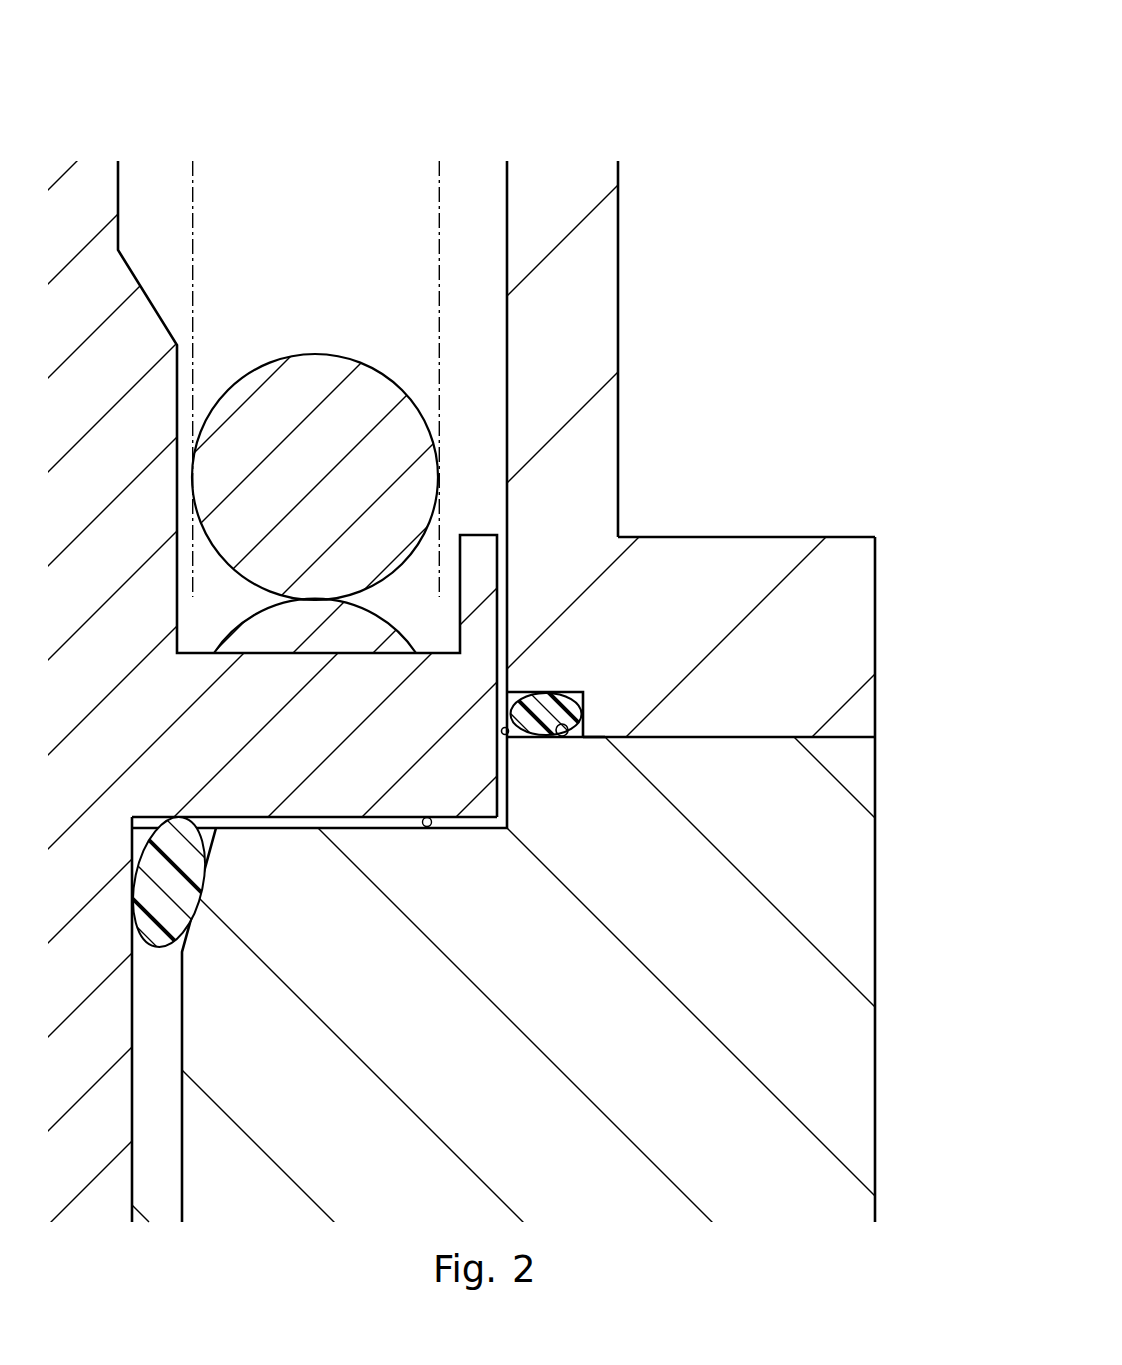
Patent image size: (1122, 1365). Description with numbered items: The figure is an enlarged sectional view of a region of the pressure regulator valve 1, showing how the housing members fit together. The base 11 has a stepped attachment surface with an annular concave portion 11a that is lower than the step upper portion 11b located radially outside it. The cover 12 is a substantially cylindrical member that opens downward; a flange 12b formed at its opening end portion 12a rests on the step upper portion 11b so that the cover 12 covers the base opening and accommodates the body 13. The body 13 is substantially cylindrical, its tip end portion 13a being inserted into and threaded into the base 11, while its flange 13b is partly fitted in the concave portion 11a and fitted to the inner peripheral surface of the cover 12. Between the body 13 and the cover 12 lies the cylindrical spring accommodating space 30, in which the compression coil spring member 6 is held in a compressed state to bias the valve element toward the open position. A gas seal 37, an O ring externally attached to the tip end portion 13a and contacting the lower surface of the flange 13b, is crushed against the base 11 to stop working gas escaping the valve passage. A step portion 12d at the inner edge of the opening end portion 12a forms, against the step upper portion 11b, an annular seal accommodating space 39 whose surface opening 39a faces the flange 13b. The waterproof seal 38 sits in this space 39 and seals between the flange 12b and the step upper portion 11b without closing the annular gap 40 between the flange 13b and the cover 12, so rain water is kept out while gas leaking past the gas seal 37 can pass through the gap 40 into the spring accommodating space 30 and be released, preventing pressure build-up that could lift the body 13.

The pressure regulator valve 1 is at (794, 71).
The spring member 6 is at (412, 433).
The base 11 is at (863, 1093).
The concave portion 11a is at (433, 827).
The step upper portion 11b is at (770, 734).
The cover 12 is at (608, 297).
The opening end portion 12a is at (600, 738).
The flange 12b is at (772, 538).
The step portion 12d is at (585, 698).
The body 13 is at (109, 201).
The tip end portion 13a is at (118, 1127).
The flange 13b is at (305, 808).
The spring accommodating space 30 is at (338, 216).
The gas seal 37 is at (172, 917).
The waterproof seal 38 is at (550, 691).
The seal accommodating space 39 is at (558, 738).
The surface opening 39a is at (508, 740).
The gap 40 is at (502, 618).